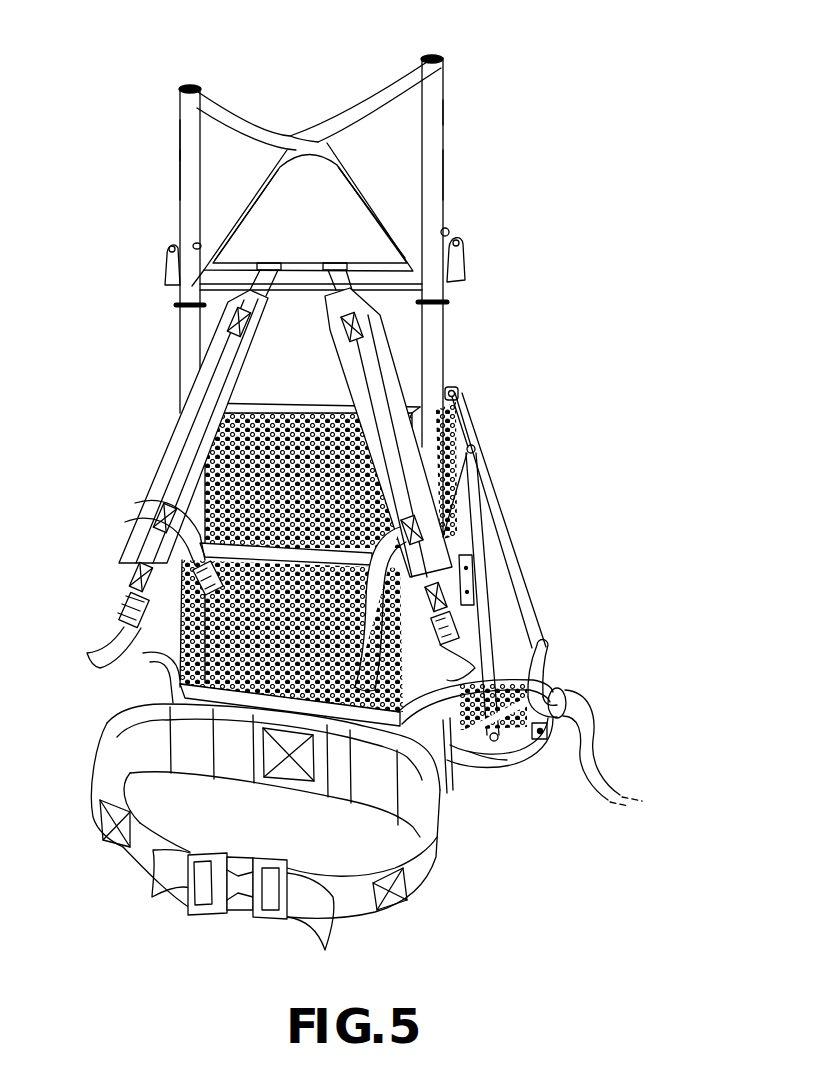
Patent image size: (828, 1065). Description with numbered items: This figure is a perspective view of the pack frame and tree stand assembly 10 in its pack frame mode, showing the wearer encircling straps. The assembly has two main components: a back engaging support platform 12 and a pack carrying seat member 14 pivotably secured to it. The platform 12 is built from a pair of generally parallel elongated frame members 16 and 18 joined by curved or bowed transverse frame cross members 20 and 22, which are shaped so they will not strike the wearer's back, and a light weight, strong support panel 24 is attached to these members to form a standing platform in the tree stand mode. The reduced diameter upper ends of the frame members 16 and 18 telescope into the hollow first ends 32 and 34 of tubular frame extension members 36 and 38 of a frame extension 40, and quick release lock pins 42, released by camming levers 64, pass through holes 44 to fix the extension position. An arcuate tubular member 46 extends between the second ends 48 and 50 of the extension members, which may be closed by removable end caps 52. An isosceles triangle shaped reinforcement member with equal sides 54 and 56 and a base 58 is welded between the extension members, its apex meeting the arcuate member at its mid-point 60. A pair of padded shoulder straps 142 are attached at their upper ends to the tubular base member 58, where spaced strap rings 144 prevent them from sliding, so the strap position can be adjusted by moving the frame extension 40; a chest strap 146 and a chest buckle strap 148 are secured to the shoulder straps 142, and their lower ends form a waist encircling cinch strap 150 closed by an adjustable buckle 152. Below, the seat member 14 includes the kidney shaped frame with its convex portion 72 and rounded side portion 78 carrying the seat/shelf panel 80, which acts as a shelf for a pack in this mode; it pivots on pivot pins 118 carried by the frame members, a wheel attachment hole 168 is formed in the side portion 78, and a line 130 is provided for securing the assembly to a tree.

The pack frame and tree stand assembly 10 is at (595, 365).
The back engaging support platform 12 is at (476, 294).
The pack carrying seat member 14 is at (556, 620).
The elongated frame member 16 is at (185, 362).
The elongated frame member 18 is at (430, 357).
The transverse frame cross member 20 is at (283, 413).
The transverse frame cross member 22 is at (165, 508).
The support panel 24 is at (237, 497).
The hollow first end 32 is at (185, 300).
The hollow first end 34 is at (437, 298).
The frame extension member 36 is at (185, 170).
The frame extension member 38 is at (440, 195).
The back engaging support platform frame extension 40 is at (380, 165).
The quick release lock pin 42 is at (200, 243).
The hole 44 is at (186, 140).
The arcuate tubular member 46 is at (357, 110).
The second end 48 is at (180, 90).
The second end 50 is at (440, 70).
The removable end cap 52 is at (207, 88).
The triangle side 54 is at (282, 170).
The triangle side 56 is at (340, 170).
The triangle base 58 is at (375, 268).
The mid-point of arcuate tubular member 60 is at (300, 138).
The camming lever 64 is at (168, 283).
The convex portion 72 is at (548, 670).
The rounded side portion 78 is at (510, 753).
The seat/shelf panel 80 is at (507, 760).
The pivot pin 118 is at (459, 392).
The line 130 is at (605, 782).
The padded shoulder strap 142 is at (180, 440).
The strap ring 144 is at (292, 262).
The chest strap 146 is at (447, 652).
The chest buckle strap 148 is at (180, 530).
The waist encircling cinch strap 150 is at (420, 867).
The adjustable buckle 152 is at (228, 890).
The wheel attachment hole 168 is at (540, 740).